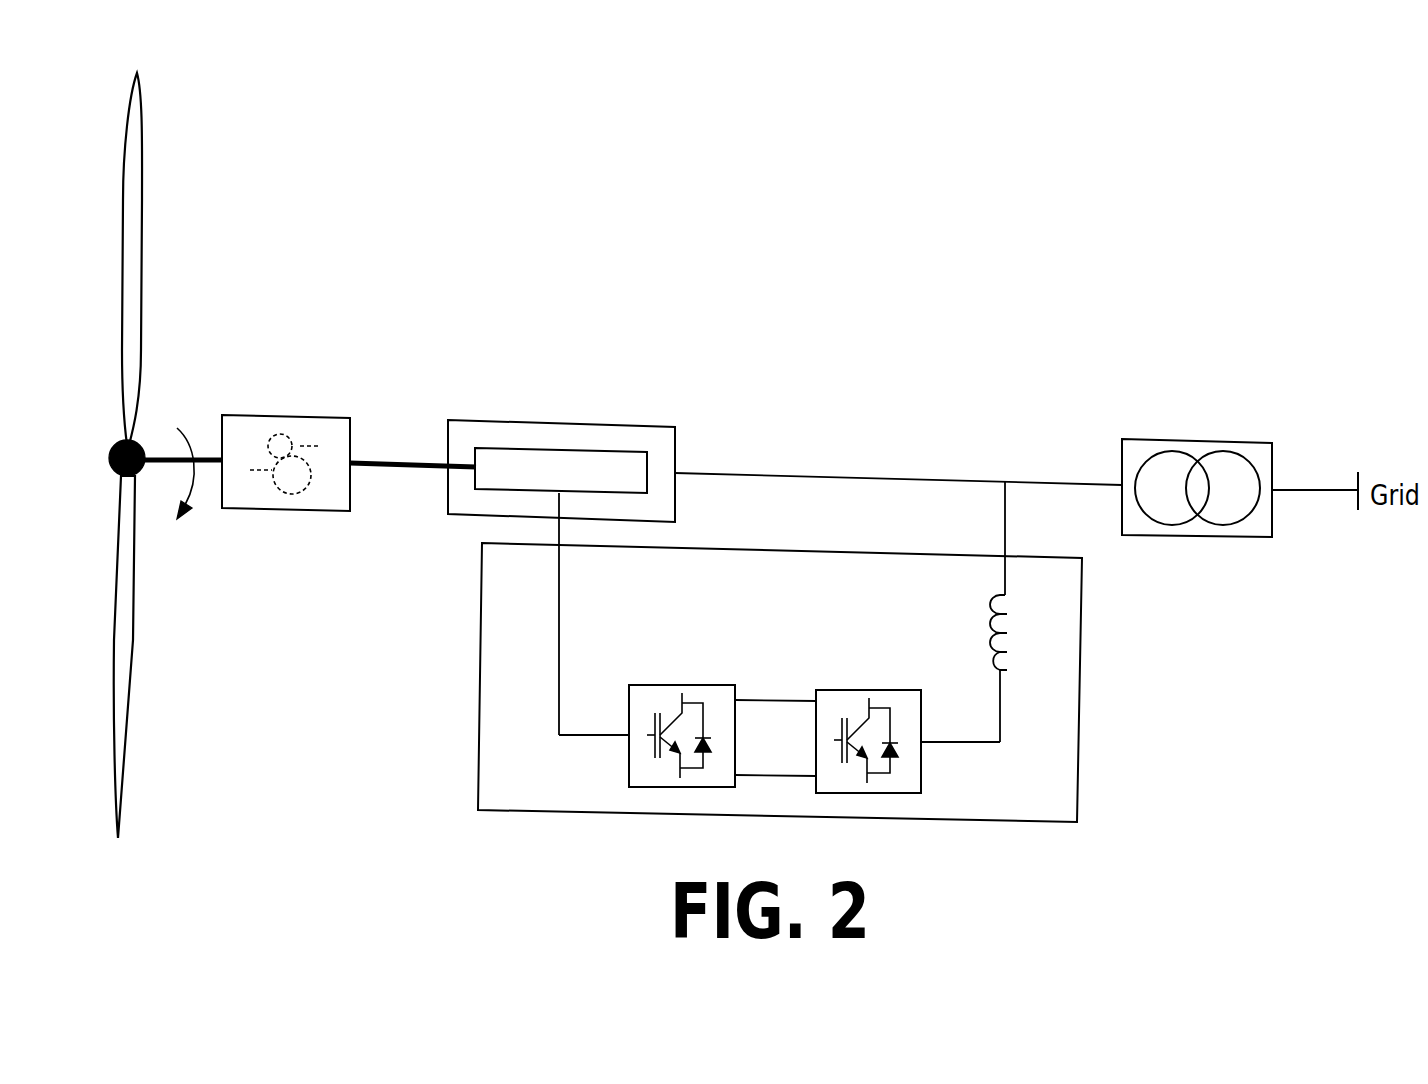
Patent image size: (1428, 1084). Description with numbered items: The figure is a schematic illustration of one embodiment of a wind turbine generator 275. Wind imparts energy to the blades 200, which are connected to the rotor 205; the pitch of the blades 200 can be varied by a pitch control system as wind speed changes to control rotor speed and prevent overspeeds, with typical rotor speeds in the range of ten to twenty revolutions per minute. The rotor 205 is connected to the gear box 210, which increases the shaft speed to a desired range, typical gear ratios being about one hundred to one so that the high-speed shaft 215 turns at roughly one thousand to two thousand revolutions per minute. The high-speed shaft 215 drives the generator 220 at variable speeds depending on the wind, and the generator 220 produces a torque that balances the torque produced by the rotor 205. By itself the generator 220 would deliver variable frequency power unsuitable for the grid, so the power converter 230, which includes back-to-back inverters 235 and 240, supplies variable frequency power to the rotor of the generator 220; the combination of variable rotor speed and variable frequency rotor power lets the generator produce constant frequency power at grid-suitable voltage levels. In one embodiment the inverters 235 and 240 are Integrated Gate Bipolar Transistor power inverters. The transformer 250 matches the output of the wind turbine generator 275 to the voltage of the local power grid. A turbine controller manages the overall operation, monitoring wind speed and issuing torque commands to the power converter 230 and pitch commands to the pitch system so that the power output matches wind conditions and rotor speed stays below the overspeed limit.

The blades 200 is at (143, 235).
The rotor 205 is at (158, 460).
The gear box 210 is at (293, 415).
The high-speed shaft 215 is at (385, 468).
The generator 220 is at (561, 453).
The power converter 230 is at (1063, 811).
The inverter 235 is at (665, 685).
The inverter 240 is at (850, 690).
The transformer 250 is at (1191, 468).
The wind turbine generator 275 is at (1203, 281).